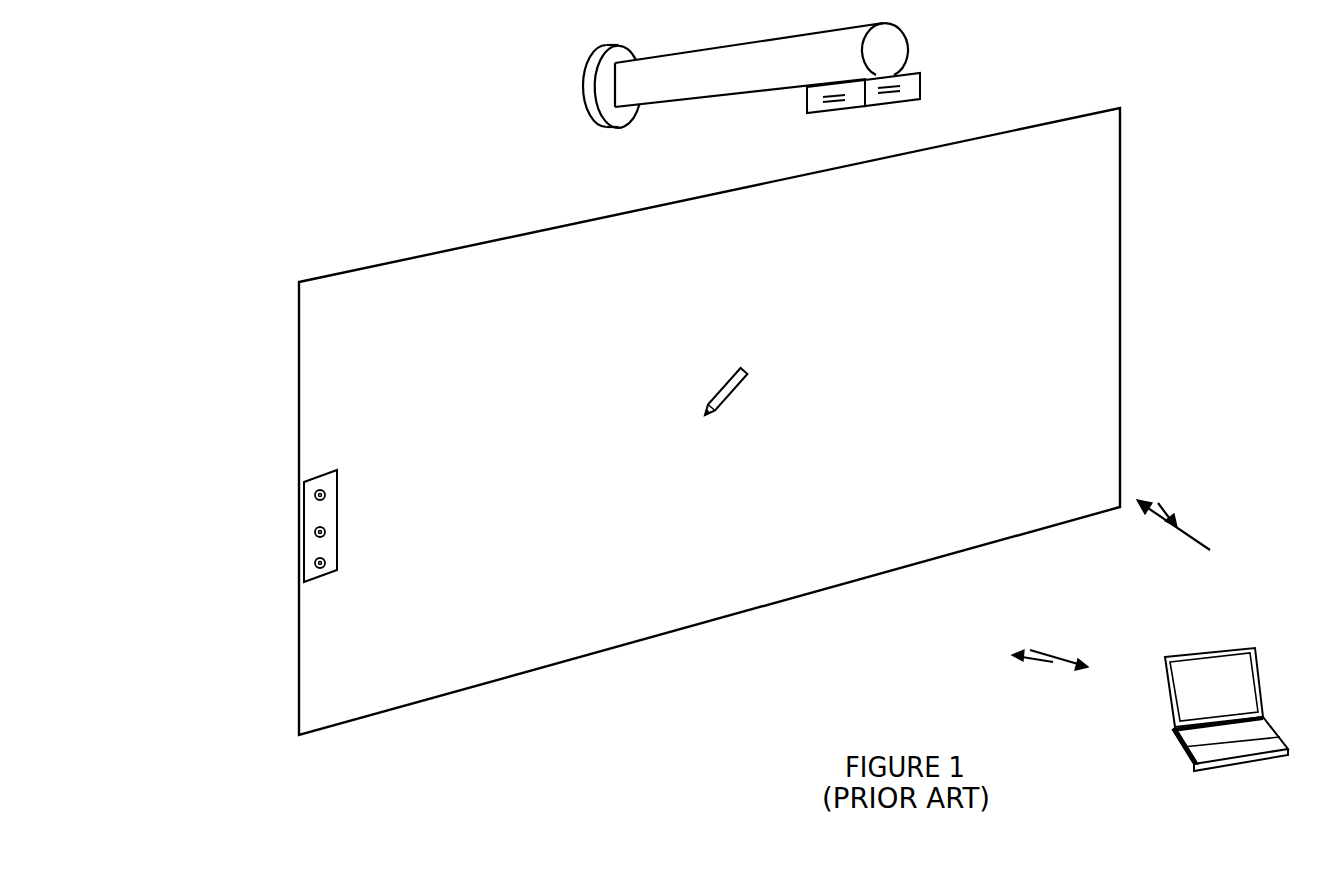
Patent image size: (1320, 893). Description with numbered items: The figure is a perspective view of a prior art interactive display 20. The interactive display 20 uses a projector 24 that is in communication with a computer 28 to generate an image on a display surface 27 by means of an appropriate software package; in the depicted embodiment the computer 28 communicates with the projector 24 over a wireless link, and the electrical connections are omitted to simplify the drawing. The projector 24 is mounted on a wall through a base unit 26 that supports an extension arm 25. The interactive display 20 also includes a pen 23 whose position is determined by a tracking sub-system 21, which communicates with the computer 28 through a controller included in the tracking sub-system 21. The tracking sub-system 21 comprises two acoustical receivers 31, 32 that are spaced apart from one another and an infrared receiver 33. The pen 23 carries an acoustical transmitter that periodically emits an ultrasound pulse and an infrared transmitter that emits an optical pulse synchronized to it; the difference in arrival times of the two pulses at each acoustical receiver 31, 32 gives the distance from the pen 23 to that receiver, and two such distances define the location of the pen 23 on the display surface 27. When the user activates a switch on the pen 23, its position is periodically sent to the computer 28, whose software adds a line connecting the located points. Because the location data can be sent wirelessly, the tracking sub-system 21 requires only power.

The interactive display 20 is at (258, 161).
The tracking sub-system 21 is at (337, 545).
The pen 23 is at (733, 387).
The projector 24 is at (920, 88).
The extension arm 25 is at (717, 88).
The base unit 26 is at (590, 103).
The display surface 27 is at (538, 653).
The computer 28 is at (1203, 662).
The acoustical receiver 31 is at (320, 568).
The acoustical receiver 32 is at (325, 494).
The infrared receiver 33 is at (325, 532).